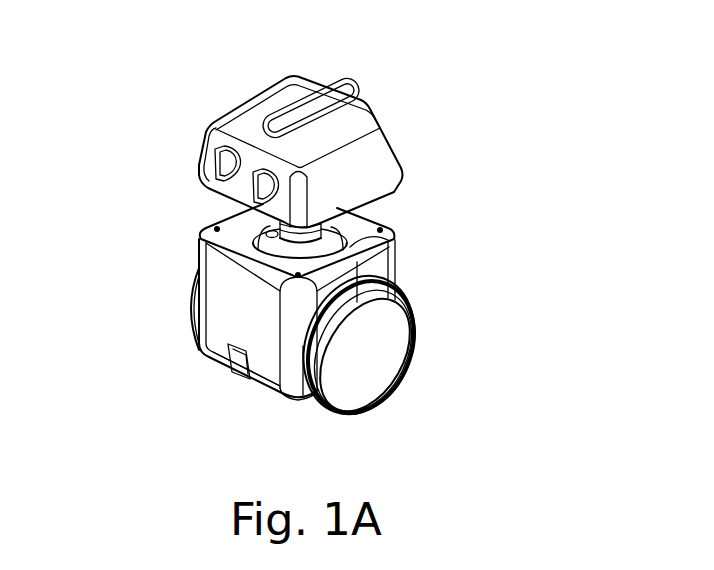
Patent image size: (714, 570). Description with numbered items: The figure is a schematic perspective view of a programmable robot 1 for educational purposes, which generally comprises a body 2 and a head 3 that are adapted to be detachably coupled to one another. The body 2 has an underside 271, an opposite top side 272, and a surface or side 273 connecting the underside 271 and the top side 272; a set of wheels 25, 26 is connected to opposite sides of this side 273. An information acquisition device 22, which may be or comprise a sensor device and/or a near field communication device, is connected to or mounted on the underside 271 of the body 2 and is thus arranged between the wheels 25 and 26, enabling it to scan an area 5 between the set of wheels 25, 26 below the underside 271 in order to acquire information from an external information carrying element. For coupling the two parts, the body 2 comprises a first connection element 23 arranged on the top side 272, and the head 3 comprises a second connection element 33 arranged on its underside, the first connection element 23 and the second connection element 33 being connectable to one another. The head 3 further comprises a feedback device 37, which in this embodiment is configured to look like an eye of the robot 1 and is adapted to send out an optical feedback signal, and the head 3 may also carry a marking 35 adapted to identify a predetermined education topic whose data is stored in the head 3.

The programmable robot 1 is at (483, 177).
The body 2 is at (158, 233).
The head 3 is at (226, 90).
The area 5 is at (289, 449).
The information acquisition device 22 is at (224, 358).
The first connection element 23 is at (326, 255).
The wheel 25 is at (225, 311).
The wheel 26 is at (372, 372).
The second connection element 33 is at (392, 196).
The marking 35 is at (375, 156).
The feedback device 37 is at (222, 156).
The underside 271 is at (262, 392).
The top side 272 is at (370, 226).
The side 273 is at (195, 316).